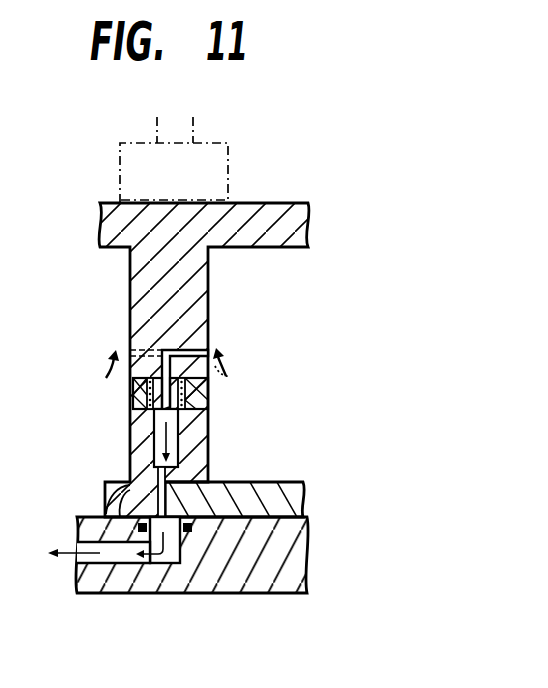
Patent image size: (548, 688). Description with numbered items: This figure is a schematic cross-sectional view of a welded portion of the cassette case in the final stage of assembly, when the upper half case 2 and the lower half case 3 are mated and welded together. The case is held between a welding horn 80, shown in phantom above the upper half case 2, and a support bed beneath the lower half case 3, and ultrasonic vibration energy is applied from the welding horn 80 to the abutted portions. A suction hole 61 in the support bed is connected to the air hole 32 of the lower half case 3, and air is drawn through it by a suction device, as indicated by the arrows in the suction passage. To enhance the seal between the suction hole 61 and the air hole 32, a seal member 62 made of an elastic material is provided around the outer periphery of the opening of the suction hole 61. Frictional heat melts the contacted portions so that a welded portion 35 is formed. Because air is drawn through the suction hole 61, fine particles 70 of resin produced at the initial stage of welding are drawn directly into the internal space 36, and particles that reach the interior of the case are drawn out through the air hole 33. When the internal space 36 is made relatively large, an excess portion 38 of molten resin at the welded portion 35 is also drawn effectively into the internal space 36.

The upper half case 2 is at (246, 205).
The lower half case 3 is at (303, 500).
The air hole 32 is at (163, 500).
The air hole 33 is at (183, 348).
The welded portion 35 is at (150, 403).
The internal space 36 is at (172, 440).
The excess portion of the molten resin 38 is at (153, 432).
The suction hole 61 is at (77, 530).
The seal member 62 is at (138, 520).
The fine particles 70 is at (108, 378).
The welding horn 80 is at (120, 178).